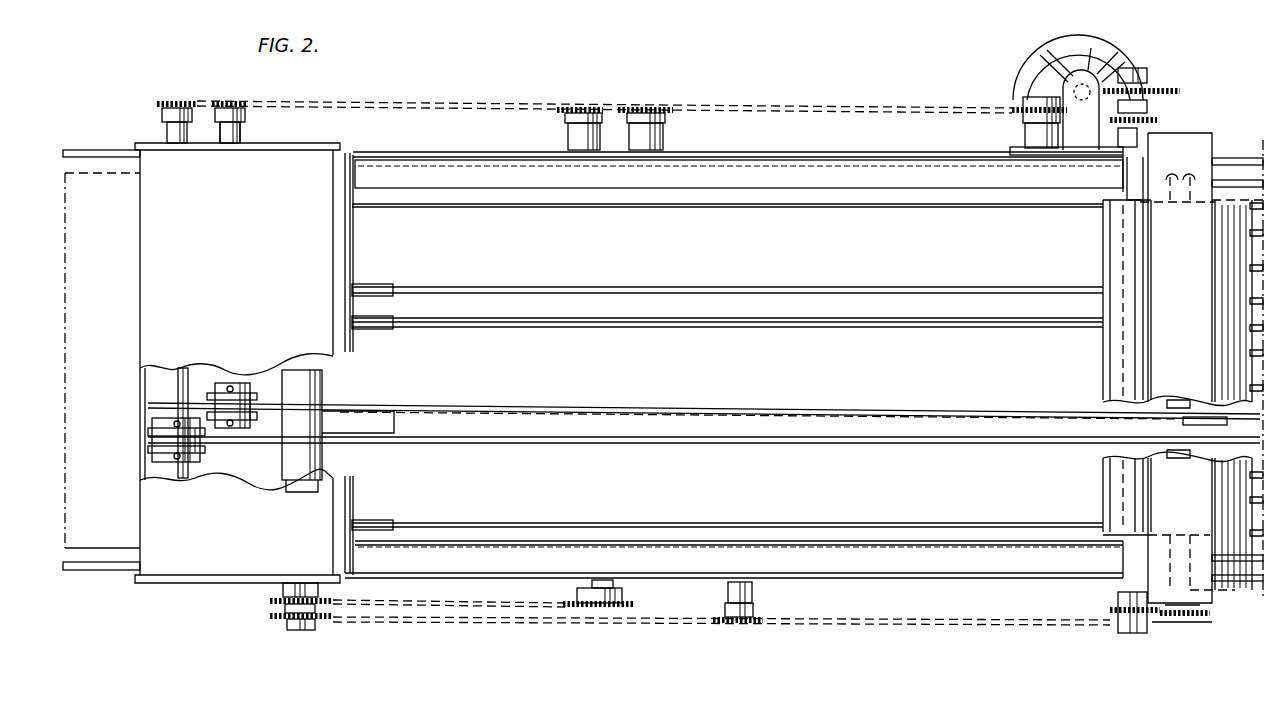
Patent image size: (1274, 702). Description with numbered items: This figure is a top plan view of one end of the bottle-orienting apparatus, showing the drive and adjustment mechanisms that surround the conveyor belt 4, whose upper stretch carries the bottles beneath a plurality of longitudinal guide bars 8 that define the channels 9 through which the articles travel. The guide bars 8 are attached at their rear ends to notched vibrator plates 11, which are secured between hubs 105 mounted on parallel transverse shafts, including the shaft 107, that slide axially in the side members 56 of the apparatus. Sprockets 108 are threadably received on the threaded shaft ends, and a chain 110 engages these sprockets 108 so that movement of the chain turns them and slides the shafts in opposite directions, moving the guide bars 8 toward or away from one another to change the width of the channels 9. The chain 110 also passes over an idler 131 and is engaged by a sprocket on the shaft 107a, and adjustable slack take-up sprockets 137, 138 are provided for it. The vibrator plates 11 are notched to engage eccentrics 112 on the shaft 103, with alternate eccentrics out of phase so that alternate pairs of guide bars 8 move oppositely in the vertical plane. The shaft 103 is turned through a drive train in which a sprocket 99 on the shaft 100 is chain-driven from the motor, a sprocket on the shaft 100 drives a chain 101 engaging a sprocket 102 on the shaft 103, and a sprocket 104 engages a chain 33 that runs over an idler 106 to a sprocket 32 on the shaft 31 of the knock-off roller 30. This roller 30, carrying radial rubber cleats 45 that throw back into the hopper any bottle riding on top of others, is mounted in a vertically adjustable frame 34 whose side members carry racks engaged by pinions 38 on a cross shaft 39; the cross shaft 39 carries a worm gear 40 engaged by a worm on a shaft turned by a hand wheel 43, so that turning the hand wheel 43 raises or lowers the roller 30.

The conveyor belt 4 is at (105, 175).
The guide bars 8 is at (893, 322).
The channels 9 is at (796, 272).
The vibrator plates 11 is at (393, 287).
The knock-off roller 30 is at (1118, 270).
The shaft 31 is at (1198, 372).
The sprocket 32 is at (1200, 624).
The chain 33 is at (528, 622).
The vertically adjustable frame 34 is at (1165, 366).
The pinions 38 is at (1160, 118).
The cross shaft 39 is at (1125, 155).
The worm gear 40 is at (1165, 88).
The hand wheel 43 is at (1132, 55).
The cleats 45 is at (1252, 206).
The side members 56 is at (118, 572).
The sprocket 99 is at (634, 603).
The shaft 100 is at (605, 583).
The chain 101 is at (436, 605).
The sprocket 102 is at (268, 602).
The shaft 103 is at (305, 494).
The sprocket 104 is at (327, 622).
The hubs 105 is at (240, 385).
The idler 106 is at (745, 625).
The shaft 107 is at (182, 368).
The shaft 107a is at (247, 130).
The sprockets 108 is at (190, 94).
The chain 110 is at (800, 105).
The eccentrics 112 is at (330, 403).
The idler 131 is at (1015, 102).
The slack take-up sprocket 137 is at (600, 98).
The slack take-up sprocket 138 is at (665, 98).